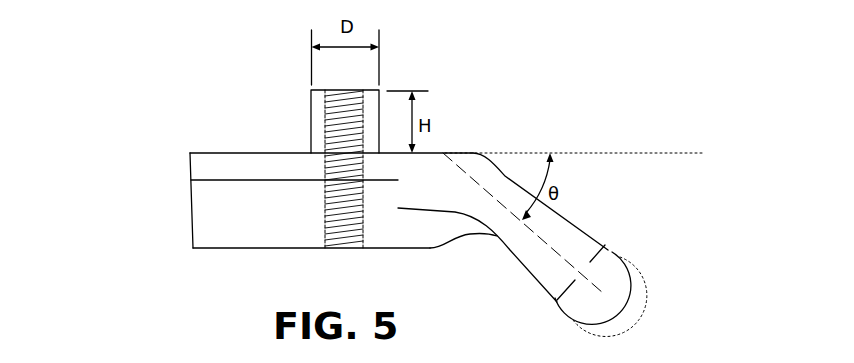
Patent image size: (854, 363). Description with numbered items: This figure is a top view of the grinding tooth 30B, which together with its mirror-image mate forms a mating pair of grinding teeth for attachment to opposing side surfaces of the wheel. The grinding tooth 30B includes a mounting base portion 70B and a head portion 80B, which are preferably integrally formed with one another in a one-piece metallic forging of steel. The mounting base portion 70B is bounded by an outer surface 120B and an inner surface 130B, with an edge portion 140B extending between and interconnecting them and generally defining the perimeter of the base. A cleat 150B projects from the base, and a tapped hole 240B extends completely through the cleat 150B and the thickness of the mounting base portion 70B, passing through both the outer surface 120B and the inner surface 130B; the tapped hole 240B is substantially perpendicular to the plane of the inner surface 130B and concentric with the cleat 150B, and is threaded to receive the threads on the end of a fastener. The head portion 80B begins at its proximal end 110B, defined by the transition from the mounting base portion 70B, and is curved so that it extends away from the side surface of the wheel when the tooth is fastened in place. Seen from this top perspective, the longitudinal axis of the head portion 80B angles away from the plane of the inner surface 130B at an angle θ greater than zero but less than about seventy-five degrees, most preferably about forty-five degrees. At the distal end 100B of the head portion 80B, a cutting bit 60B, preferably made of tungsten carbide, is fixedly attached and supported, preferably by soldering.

The grinding tooth 30B is at (155, 178).
The inner surface 130B is at (218, 152).
The edge portion 140B is at (190, 200).
The mounting base portion 70B is at (225, 233).
The outer surface 120B is at (240, 250).
The cleats 150B is at (312, 122).
The tapped holes 240B is at (340, 240).
The proximal end 110B is at (492, 212).
The head portion 80B is at (560, 235).
The distal end 100B is at (612, 283).
The cutting bit 60B is at (633, 328).